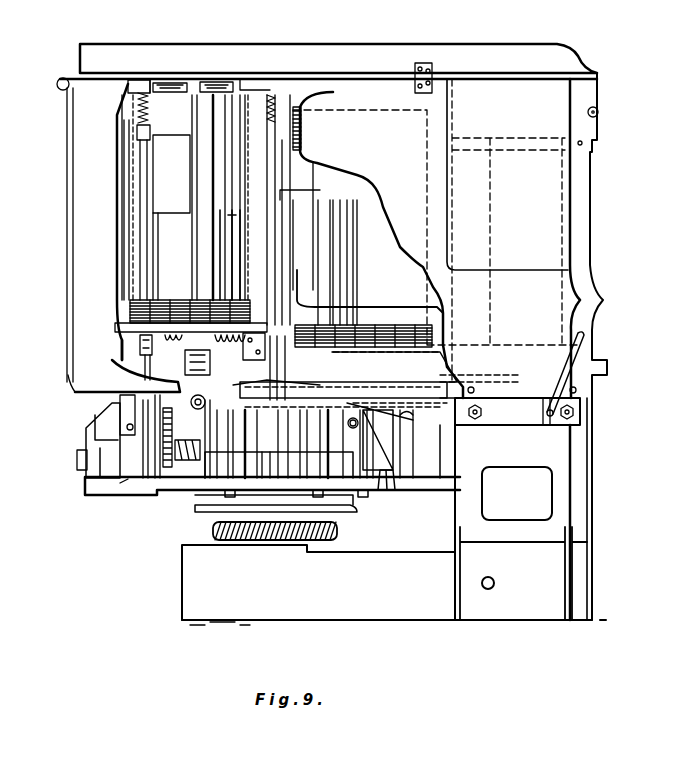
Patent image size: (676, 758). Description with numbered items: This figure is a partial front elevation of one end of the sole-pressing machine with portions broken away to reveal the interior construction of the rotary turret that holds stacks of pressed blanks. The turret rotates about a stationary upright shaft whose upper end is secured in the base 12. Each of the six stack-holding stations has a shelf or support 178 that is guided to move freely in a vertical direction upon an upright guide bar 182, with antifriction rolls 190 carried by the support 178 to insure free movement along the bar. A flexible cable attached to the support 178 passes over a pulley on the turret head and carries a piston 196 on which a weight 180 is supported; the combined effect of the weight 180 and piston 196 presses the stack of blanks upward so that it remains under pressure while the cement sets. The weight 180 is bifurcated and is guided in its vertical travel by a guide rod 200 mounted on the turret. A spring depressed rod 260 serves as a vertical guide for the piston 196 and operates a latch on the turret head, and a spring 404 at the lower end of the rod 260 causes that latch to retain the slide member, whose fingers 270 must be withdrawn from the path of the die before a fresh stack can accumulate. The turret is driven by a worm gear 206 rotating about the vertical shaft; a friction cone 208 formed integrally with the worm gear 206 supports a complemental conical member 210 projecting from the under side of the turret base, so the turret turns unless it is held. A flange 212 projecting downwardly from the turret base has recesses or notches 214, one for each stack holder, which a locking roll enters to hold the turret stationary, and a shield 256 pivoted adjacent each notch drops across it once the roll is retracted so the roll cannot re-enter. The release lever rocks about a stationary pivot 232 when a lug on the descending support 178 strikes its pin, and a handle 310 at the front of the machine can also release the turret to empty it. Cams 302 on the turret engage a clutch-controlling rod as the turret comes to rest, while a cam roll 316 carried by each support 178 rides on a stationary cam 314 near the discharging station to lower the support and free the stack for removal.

The base 12 is at (563, 495).
The fingers 270 is at (207, 83).
The weight 180 is at (172, 140).
The piston 196 is at (222, 225).
The upright guide bar 182 is at (208, 243).
The spring depressed rod 260 is at (220, 262).
The shelf or support 178 is at (186, 318).
The guide rod 200 is at (293, 267).
The handle 310 is at (557, 380).
The cam roll 316 is at (353, 417).
The antifriction rolls 190 is at (170, 382).
The cams 302 is at (72, 444).
The stationary pivot 232 is at (555, 427).
The stationary cam 314 is at (278, 436).
The shield 256 is at (398, 492).
The spring 404 is at (365, 495).
The flange 212 is at (95, 495).
The recesses or notches 214 is at (185, 500).
The friction cone 208 is at (200, 508).
The worm gear 206 is at (248, 545).
The conical member 210 is at (358, 525).